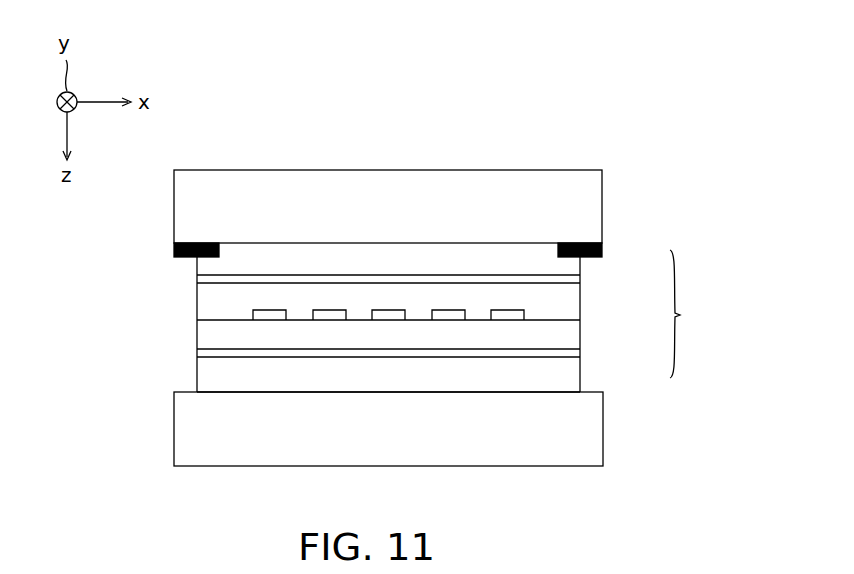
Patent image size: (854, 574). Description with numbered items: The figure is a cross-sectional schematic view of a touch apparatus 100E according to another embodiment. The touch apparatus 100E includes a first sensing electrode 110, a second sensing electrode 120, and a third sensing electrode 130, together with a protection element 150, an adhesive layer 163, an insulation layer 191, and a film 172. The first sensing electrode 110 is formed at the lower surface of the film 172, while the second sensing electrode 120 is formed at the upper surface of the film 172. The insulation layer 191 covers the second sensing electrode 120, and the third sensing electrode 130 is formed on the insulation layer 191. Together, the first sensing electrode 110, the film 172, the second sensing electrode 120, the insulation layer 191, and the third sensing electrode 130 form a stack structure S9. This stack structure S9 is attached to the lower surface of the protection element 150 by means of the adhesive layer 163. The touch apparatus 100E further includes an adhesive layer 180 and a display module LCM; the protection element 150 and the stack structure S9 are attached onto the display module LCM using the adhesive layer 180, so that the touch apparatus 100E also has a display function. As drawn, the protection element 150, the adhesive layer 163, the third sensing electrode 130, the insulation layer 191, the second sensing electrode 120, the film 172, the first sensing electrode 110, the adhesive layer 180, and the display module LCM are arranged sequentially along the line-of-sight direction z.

The protection element 150 is at (590, 196).
The adhesive layer 163 is at (205, 265).
The third sensing electrode 130 is at (578, 282).
The insulation layer 191 is at (573, 303).
The second sensing electrode 120 is at (520, 313).
The film 172 is at (567, 338).
The first sensing electrode 110 is at (572, 354).
The adhesive layer 180 is at (205, 378).
The stack structure S9 is at (454, 321).
The display module LCM is at (590, 430).
The touch apparatus 100E is at (726, 486).